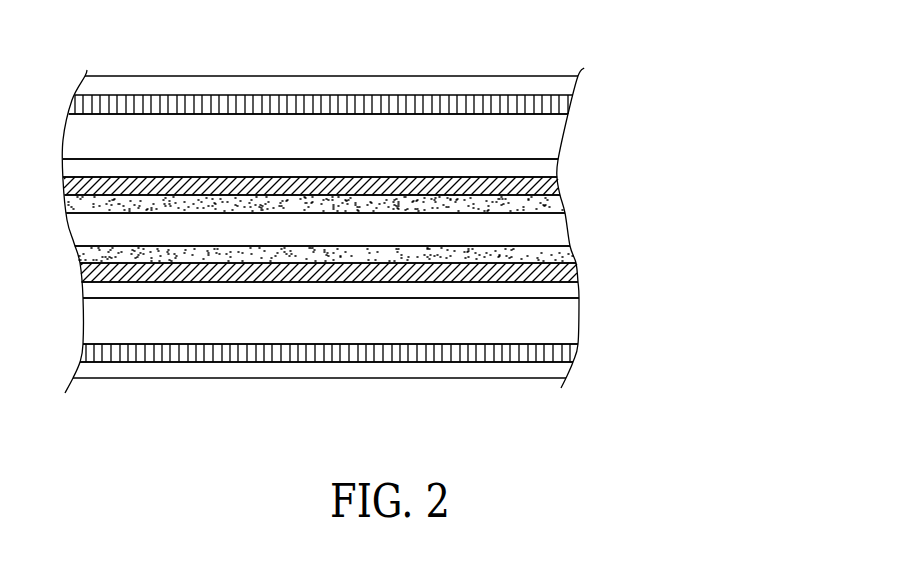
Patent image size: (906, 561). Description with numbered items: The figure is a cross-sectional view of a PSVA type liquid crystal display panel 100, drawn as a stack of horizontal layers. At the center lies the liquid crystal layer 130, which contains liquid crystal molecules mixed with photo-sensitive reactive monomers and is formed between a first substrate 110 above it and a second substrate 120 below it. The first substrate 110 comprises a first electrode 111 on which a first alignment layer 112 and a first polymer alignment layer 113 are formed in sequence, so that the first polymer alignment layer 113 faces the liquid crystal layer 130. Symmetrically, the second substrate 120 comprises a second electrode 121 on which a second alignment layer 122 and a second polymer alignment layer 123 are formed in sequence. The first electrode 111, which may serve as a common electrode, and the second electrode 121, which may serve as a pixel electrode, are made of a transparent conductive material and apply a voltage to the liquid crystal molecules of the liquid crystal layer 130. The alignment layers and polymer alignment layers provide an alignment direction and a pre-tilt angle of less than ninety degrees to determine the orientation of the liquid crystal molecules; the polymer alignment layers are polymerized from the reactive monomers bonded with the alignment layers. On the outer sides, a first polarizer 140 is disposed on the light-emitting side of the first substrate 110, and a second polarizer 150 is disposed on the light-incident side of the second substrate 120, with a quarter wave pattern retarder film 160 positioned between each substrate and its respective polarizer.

The liquid crystal display panel 100 is at (680, 88).
The first substrate 110 is at (545, 128).
The first electrode 111 is at (540, 166).
The first alignment layer 112 is at (560, 178).
The first polymer alignment layer 113 is at (547, 202).
The second substrate 120 is at (563, 323).
The second electrode 121 is at (563, 289).
The second alignment layer 122 is at (573, 268).
The second polymer alignment layer 123 is at (570, 245).
The liquid crystal layer 130 is at (552, 227).
The first polarizer 140 is at (521, 86).
The second polarizer 150 is at (568, 370).
The quarter wave pattern retarder film 160 is at (558, 112).